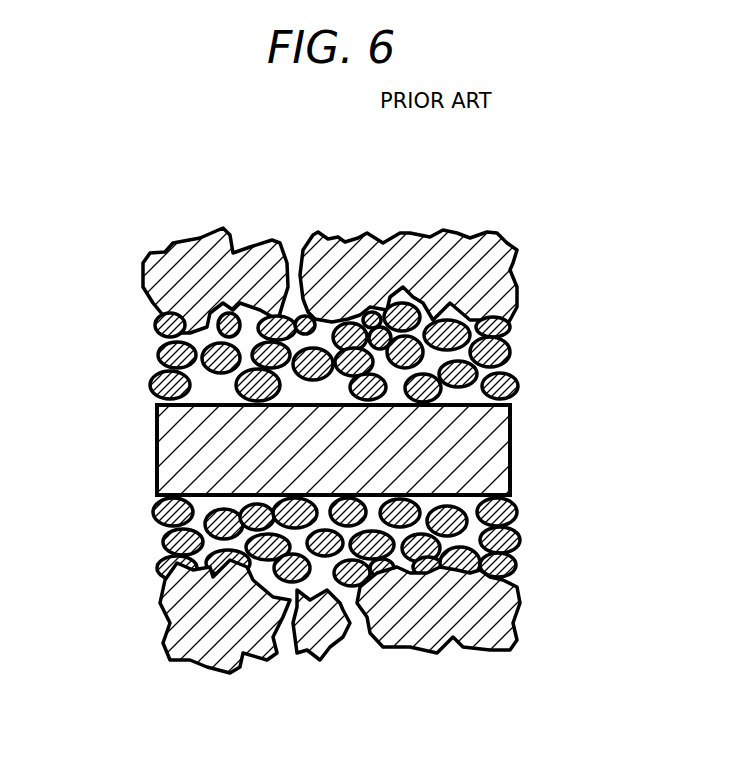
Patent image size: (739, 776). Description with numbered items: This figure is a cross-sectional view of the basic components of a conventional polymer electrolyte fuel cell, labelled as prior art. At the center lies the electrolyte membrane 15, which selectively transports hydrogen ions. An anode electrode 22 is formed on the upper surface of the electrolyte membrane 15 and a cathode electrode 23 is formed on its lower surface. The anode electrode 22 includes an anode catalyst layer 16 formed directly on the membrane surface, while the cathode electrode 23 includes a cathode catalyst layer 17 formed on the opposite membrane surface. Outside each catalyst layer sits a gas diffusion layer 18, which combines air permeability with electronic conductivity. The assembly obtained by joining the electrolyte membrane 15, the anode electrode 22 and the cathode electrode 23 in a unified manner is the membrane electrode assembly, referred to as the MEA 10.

The power storage device (prior art) 10 is at (144, 128).
The current collector 15 is at (152, 437).
The conductive particles (upper layer) 16 is at (153, 372).
The conductive particles (lower layer) 17 is at (160, 547).
The active material particles 18 is at (152, 281).
The upper electrode layer 22 is at (527, 233).
The lower electrode layer 23 is at (535, 500).